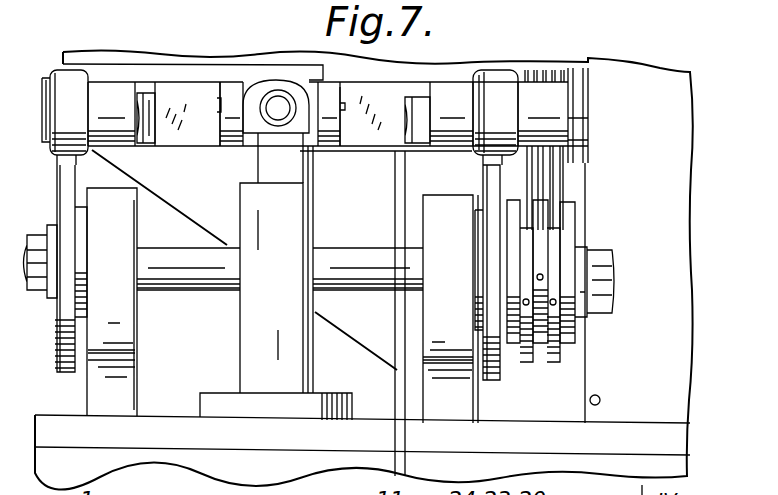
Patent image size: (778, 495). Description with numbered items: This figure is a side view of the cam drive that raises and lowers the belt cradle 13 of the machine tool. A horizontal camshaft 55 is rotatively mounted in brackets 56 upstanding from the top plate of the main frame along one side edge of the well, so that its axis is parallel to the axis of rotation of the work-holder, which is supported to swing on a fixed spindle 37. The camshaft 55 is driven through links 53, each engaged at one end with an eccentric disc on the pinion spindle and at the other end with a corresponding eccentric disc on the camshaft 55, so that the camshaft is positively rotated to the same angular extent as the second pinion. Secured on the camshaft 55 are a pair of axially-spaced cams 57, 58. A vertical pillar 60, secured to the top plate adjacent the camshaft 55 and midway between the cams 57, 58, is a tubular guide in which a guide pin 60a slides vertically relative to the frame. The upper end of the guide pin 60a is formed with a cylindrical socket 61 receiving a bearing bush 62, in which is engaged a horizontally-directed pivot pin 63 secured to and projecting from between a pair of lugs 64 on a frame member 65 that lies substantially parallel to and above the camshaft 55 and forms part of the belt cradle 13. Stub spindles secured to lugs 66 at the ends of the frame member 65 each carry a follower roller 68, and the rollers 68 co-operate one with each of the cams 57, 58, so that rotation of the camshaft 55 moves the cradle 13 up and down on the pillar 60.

The cradle 13 is at (404, 465).
The fixed spindle 37 is at (552, 103).
The link 53 is at (553, 193).
The camshaft 55 is at (195, 291).
The brackets 56 is at (117, 387).
The cam 57 is at (56, 286).
The cam 58 is at (500, 372).
The pillar 60 is at (313, 223).
The guide pin 60a is at (305, 167).
The cylindrical socket 61 is at (268, 88).
The bearing bush 62 is at (280, 92).
The pivot pin 63 is at (270, 117).
The lugs 64 is at (228, 93).
The frame member 65 is at (172, 88).
The lugs 66 is at (113, 87).
The follower roller 68 is at (77, 73).